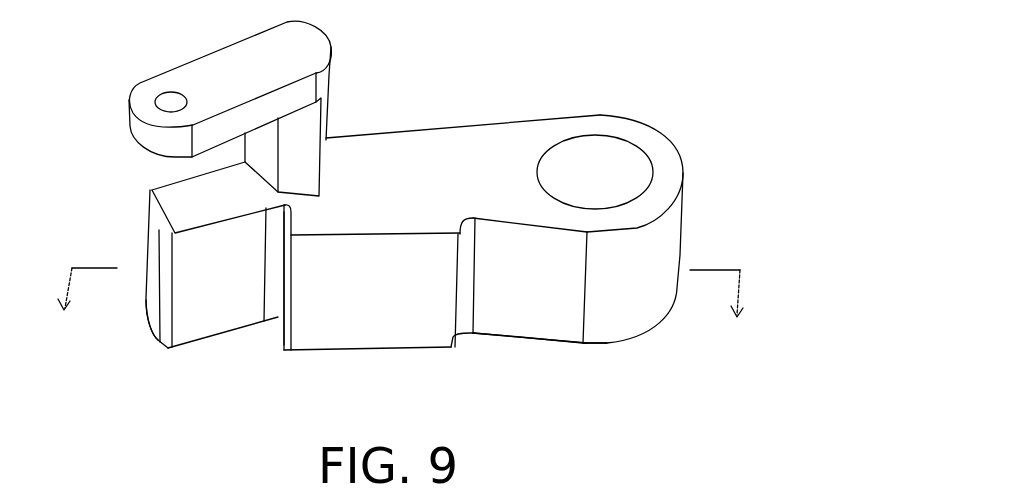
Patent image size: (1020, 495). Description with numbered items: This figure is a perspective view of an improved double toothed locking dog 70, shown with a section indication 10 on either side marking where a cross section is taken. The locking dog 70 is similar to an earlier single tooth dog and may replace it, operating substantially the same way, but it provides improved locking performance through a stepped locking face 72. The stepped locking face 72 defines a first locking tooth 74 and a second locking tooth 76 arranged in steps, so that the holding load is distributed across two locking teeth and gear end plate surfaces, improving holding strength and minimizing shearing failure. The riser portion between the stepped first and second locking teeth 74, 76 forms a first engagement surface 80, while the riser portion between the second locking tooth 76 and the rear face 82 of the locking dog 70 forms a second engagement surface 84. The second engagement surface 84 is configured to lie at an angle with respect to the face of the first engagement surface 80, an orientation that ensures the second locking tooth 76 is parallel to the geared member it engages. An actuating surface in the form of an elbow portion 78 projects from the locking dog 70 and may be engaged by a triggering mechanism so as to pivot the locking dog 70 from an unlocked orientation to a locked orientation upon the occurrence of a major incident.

The section line indicator 10 is at (400, 315).
The locking dog 70 is at (596, 95).
The stepped locking face 72 is at (545, 345).
The first locking tooth 74 is at (415, 320).
The second locking tooth 76 is at (213, 315).
The elbow portion 78 is at (330, 78).
The first engagement surface 80 is at (278, 330).
The rear face 82 is at (437, 130).
The second engagement surface 84 is at (150, 318).